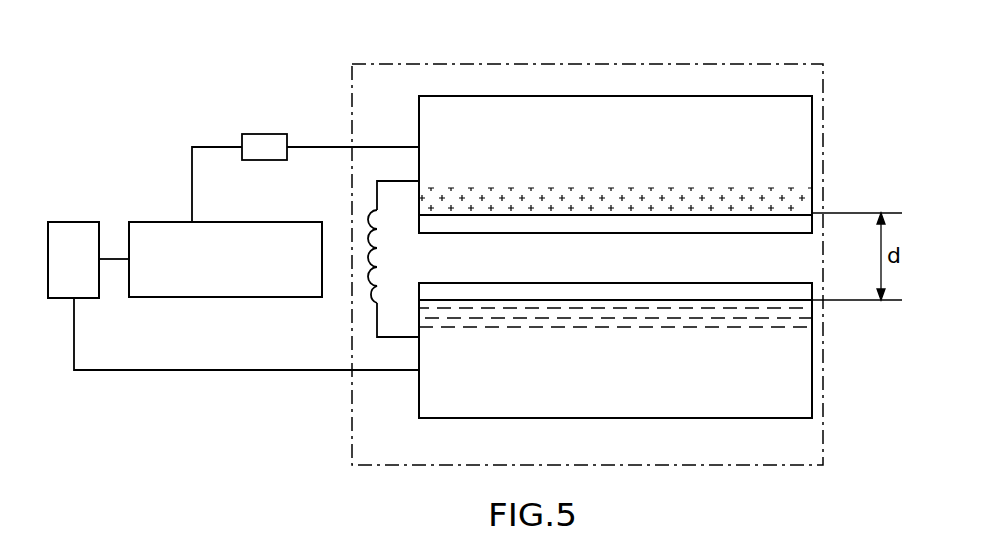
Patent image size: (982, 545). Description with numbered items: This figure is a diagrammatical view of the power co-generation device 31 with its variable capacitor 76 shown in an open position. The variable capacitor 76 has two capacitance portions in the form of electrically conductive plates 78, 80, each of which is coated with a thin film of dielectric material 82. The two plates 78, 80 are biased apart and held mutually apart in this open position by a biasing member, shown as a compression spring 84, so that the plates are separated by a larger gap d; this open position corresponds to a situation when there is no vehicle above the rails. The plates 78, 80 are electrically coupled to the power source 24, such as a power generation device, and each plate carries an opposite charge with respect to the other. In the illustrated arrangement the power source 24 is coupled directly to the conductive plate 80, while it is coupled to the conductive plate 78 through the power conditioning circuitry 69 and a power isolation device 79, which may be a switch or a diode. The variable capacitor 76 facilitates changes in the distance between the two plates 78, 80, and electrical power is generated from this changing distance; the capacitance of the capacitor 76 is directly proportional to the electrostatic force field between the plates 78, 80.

The power co-generation device 31 is at (542, 63).
The conductive plate 78 is at (806, 128).
The dielectric material 82 is at (806, 221).
The conductive plate 80 is at (806, 373).
The variable capacitor 76 is at (427, 418).
The compression spring 84 is at (368, 298).
The power isolation device 79 is at (263, 134).
The power conditioning circuitry 69 is at (168, 222).
The power source 24 is at (75, 222).